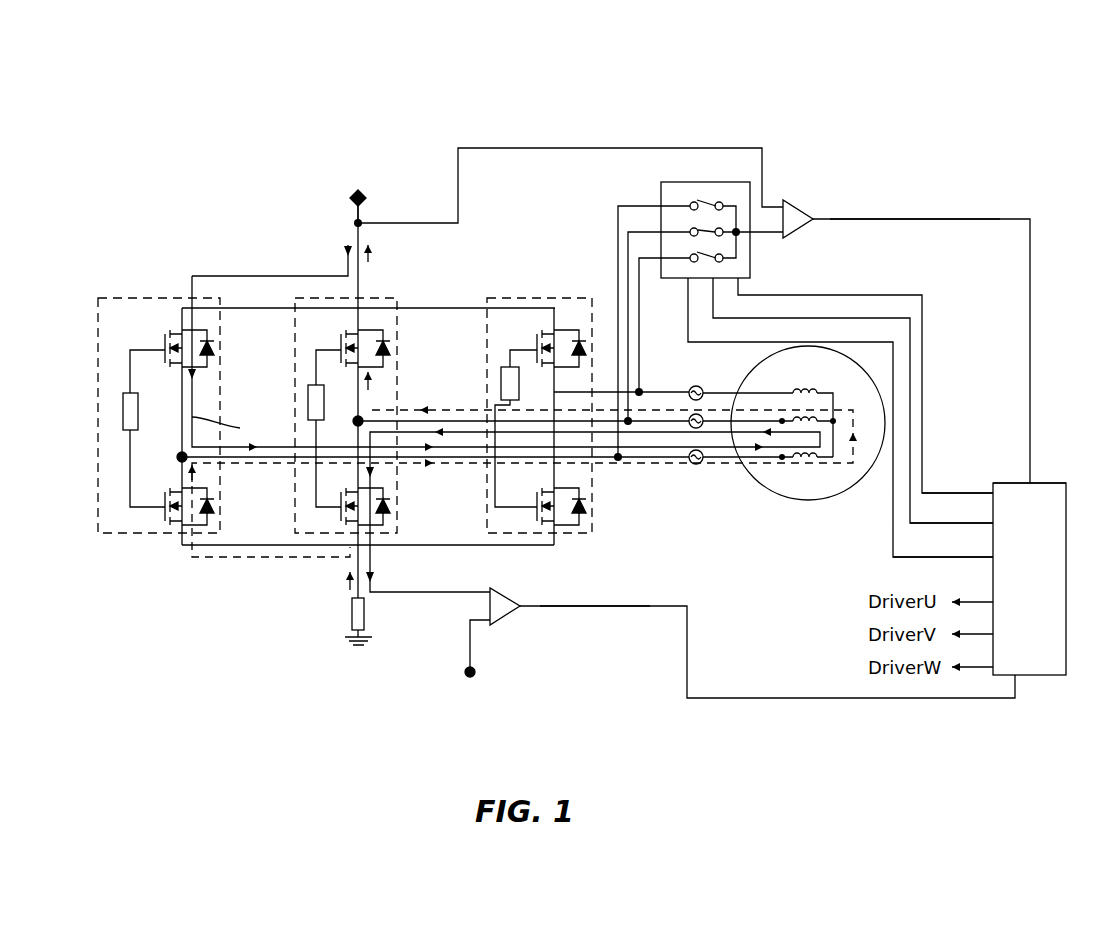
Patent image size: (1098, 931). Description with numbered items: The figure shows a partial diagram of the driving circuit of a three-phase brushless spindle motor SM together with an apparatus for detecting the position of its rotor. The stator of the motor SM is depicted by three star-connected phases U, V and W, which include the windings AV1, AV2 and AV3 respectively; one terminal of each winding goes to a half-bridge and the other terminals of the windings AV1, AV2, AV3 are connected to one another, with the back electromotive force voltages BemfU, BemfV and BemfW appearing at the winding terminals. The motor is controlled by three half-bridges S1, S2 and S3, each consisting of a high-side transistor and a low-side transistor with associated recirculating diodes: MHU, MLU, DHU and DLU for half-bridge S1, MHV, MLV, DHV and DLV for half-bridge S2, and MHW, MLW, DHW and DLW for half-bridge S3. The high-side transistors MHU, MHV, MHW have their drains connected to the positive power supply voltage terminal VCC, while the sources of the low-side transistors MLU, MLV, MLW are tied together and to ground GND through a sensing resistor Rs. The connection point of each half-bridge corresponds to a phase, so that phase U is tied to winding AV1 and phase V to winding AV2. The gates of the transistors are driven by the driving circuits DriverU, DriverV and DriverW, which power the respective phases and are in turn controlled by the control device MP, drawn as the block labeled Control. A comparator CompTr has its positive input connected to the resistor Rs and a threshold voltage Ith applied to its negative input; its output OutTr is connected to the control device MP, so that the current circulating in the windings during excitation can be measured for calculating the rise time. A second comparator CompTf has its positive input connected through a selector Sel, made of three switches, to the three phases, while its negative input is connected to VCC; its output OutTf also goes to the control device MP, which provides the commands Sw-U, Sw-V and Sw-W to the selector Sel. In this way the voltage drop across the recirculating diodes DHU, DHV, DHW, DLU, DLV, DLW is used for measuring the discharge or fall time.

The half-bridge S1 is at (135, 297).
The half-bridge S2 is at (393, 296).
The half-bridge S3 is at (512, 298).
The high-side transistor MHU is at (163, 346).
The high-side transistor MHV is at (340, 347).
The high-side transistor MHW is at (535, 347).
The low-side transistor MLU is at (158, 495).
The low-side transistor MLV is at (338, 493).
The low-side transistor MLW is at (533, 495).
The recirculating diode DHU is at (217, 352).
The recirculating diode DHV is at (388, 350).
The recirculating diode DHW is at (586, 346).
The recirculating diode DLU is at (213, 508).
The recirculating diode DLV is at (392, 506).
The recirculating diode DLW is at (586, 508).
The driving circuit DriverU is at (123, 405).
The driving circuit DriverV is at (305, 400).
The driving circuit DriverW is at (503, 382).
The positive power supply voltage terminal VCC is at (356, 194).
The phase U is at (173, 446).
The phase V is at (348, 421).
The sensing resistor Rs is at (341, 614).
The ground GND is at (361, 653).
The threshold voltage Ith is at (460, 689).
The comparator CompTr is at (528, 585).
The output of comparator CompTr OutTr is at (607, 607).
The selector Sel is at (722, 218).
The comparator CompTf is at (808, 210).
The output of comparator CompTf OutTf is at (915, 204).
The brushless motor SM is at (843, 497).
The winding AV1 is at (803, 460).
The winding AV2 is at (820, 418).
The winding AV3 is at (820, 390).
The back electromotive force voltage BemfU is at (700, 386).
The back electromotive force voltage BemfV is at (704, 426).
The back electromotive force voltage BemfW is at (684, 463).
The control circuit Control is at (1029, 579).
The control device MP is at (1045, 483).
The command Sw-U is at (957, 478).
The command Sw-V is at (951, 512).
The command Sw-W is at (943, 546).